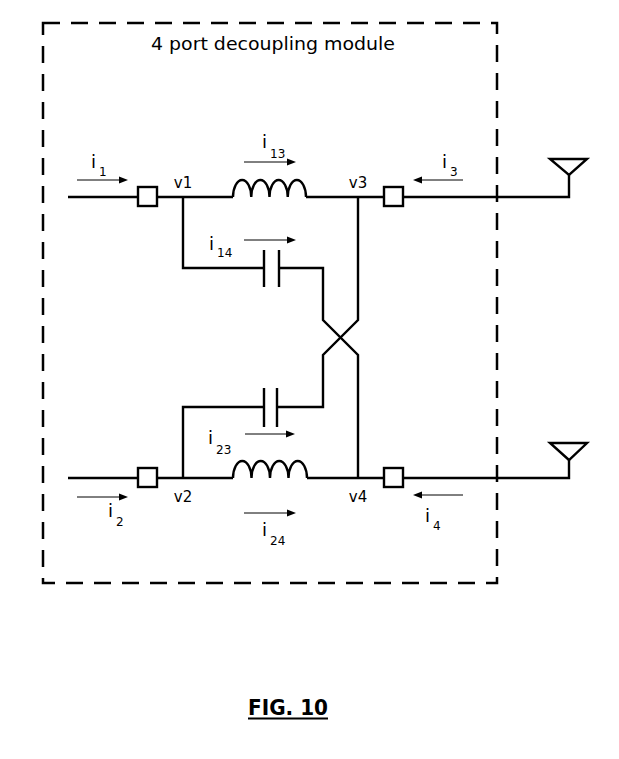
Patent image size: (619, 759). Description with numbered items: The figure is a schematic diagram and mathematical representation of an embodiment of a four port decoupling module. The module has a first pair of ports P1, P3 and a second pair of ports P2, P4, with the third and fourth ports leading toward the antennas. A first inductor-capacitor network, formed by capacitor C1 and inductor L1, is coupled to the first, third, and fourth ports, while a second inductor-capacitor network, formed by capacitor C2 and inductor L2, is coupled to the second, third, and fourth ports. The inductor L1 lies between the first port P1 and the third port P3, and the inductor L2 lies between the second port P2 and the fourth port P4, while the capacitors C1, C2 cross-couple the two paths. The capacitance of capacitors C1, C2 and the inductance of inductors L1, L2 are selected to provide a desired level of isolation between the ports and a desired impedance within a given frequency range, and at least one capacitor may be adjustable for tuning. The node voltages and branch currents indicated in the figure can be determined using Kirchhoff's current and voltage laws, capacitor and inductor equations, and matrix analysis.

The first port P1 is at (147, 211).
The second port P2 is at (147, 466).
The third port P3 is at (393, 211).
The fourth port P4 is at (393, 466).
The first inductor L1 is at (269, 205).
The second inductor L2 is at (270, 484).
The first capacitor C1 is at (271, 283).
The second capacitor C2 is at (271, 397).